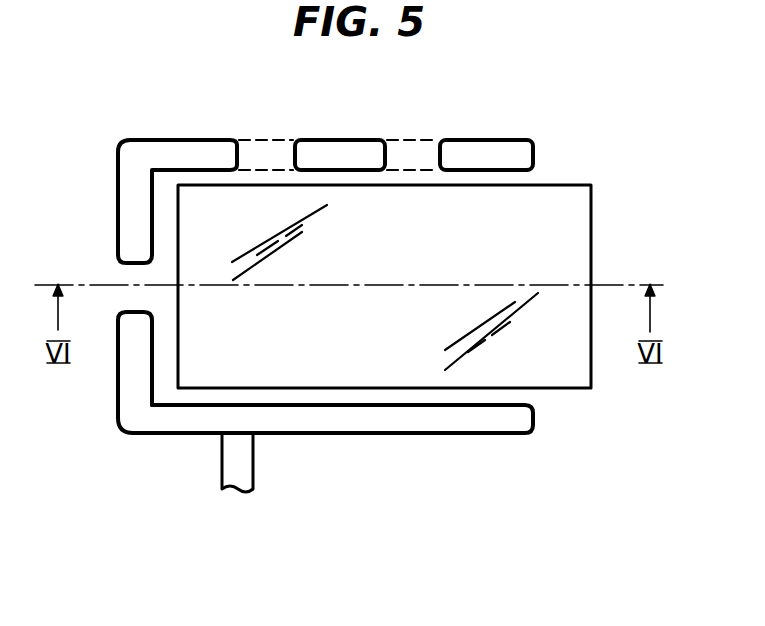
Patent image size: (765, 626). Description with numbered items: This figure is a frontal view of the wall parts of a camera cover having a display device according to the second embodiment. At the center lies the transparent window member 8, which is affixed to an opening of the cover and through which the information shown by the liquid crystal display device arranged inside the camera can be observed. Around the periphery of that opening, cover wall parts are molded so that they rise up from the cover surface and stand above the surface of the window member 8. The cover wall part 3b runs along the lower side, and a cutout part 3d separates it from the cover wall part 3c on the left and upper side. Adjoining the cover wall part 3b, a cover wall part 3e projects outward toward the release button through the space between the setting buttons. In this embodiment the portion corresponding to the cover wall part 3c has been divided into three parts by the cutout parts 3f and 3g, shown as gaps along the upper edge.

The transparent window member 8 is at (560, 212).
The cover wall part 3b is at (433, 416).
The cover wall part 3c is at (198, 153).
The cutout part 3d is at (127, 272).
The cover wall part 3e is at (240, 458).
The cutout part 3f is at (268, 155).
The cutout part 3g is at (415, 157).